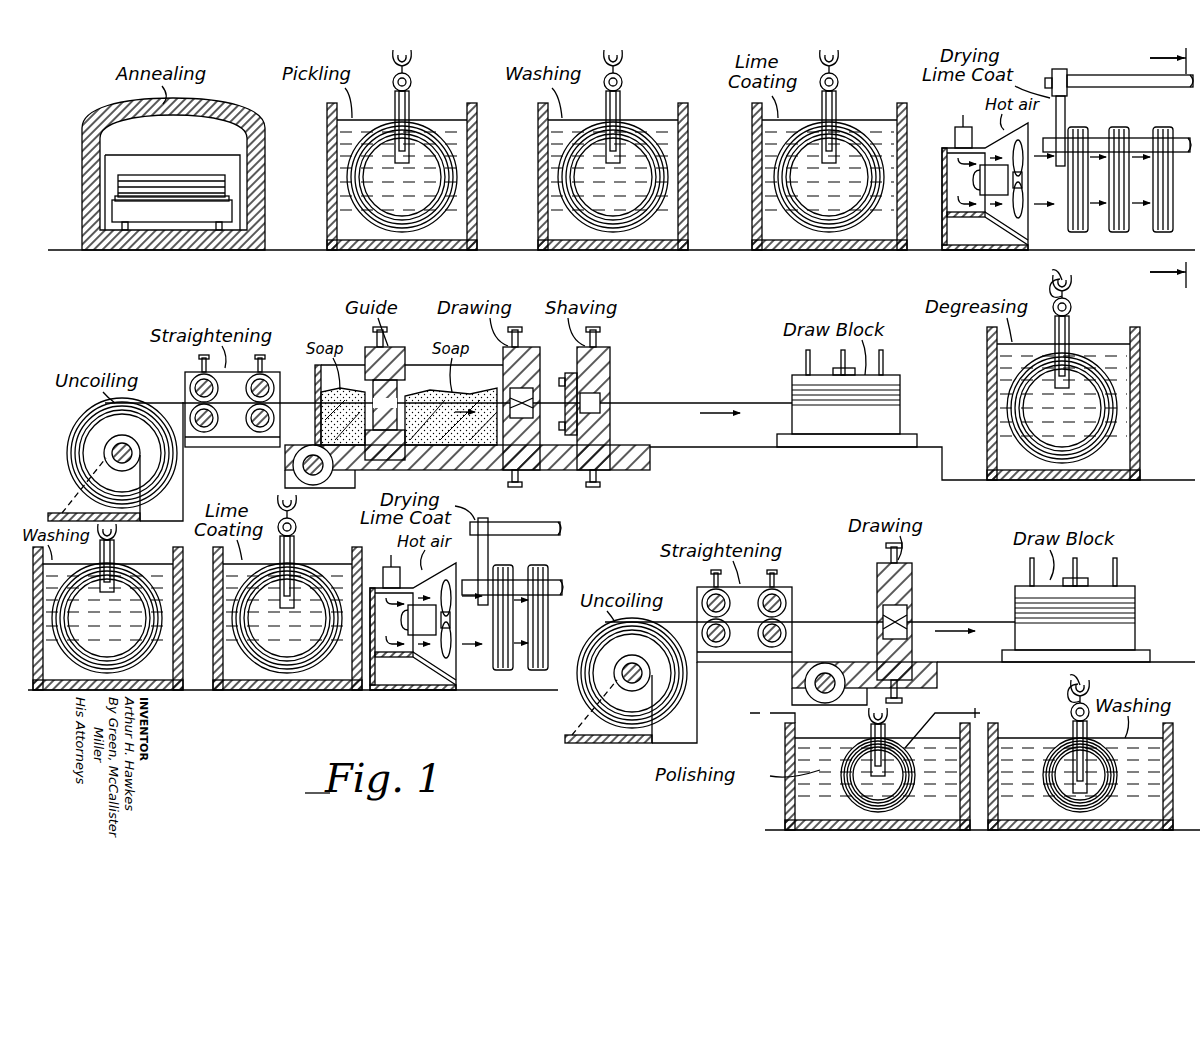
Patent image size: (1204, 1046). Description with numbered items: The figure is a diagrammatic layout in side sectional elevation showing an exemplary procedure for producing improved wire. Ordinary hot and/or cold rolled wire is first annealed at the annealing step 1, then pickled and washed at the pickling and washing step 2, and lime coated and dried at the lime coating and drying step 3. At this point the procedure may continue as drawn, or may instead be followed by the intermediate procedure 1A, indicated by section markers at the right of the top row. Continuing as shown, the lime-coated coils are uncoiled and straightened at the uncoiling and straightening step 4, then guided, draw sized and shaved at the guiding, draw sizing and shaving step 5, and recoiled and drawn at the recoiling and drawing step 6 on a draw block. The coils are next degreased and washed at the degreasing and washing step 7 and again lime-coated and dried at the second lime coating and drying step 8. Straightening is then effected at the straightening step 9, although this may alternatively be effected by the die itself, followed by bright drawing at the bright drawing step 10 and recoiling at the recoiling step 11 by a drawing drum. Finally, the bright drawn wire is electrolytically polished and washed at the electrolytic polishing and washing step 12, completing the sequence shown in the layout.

The annealing step 1 is at (173, 187).
The pickling and washing step 2 is at (617, 163).
The lime coating and drying step 3 is at (1067, 173).
The uncoiling and straightening step 4 is at (232, 414).
The guiding, draw sizing and shaving step 5 is at (467, 411).
The recoiling and drawing step 6 is at (847, 412).
The degreasing and washing step 7 is at (1063, 390).
The second lime coating and drying step 8 is at (298, 608).
The straightening step 9 is at (744, 631).
The bright drawing step 10 is at (882, 624).
The recoiling step 11 is at (1076, 625).
The electrolytic polishing and washing step 12 is at (961, 767).
The intermediate procedure 1A is at (1148, 167).